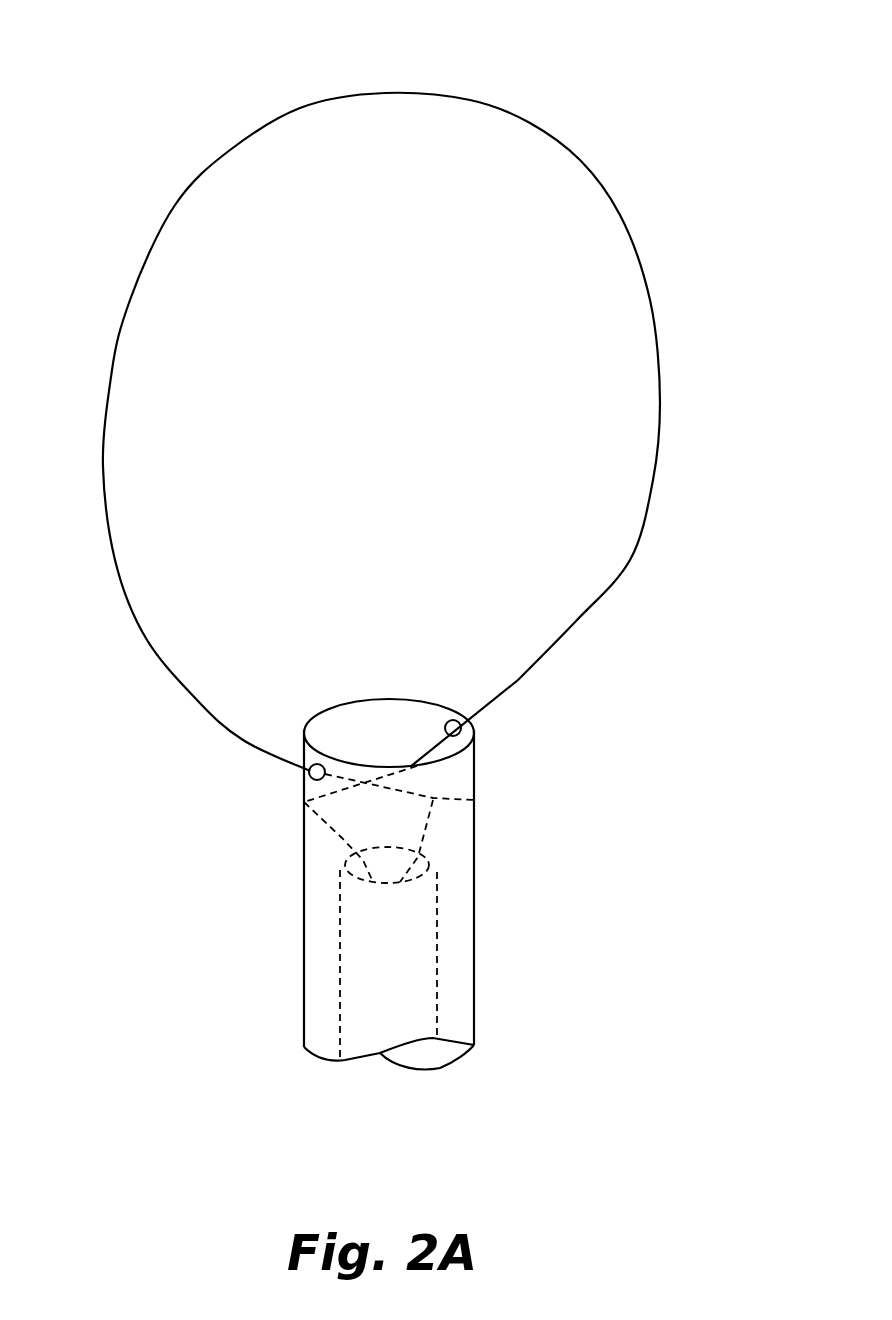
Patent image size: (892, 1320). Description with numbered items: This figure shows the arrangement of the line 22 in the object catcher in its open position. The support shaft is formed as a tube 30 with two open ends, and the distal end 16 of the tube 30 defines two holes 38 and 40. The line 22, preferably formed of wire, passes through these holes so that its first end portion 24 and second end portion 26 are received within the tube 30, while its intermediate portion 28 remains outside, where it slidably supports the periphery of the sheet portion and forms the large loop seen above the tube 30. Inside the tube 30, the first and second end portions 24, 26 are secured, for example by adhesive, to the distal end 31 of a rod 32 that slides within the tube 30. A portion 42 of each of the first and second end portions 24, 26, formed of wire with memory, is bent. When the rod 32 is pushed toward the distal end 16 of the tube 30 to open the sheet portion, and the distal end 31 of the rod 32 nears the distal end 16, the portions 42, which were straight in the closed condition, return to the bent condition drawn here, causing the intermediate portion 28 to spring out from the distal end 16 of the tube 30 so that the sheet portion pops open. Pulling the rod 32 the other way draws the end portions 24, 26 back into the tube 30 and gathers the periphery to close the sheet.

The line 22 is at (660, 403).
The intermediate portion 28 is at (388, 93).
The tube 30 is at (474, 780).
The distal end 16 is at (470, 727).
The hole 40 is at (309, 770).
The hole 38 is at (452, 720).
The portion 42 is at (474, 800).
The first end portion 24 is at (433, 800).
The second end portion 26 is at (342, 838).
The distal end 31 is at (430, 857).
The rod 32 is at (405, 966).